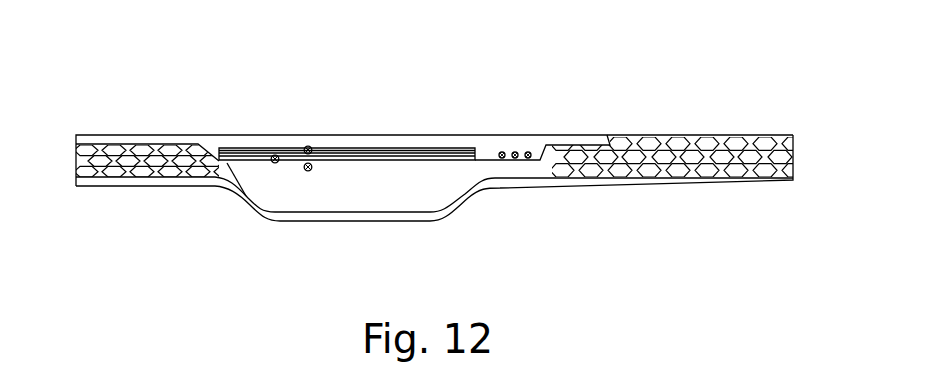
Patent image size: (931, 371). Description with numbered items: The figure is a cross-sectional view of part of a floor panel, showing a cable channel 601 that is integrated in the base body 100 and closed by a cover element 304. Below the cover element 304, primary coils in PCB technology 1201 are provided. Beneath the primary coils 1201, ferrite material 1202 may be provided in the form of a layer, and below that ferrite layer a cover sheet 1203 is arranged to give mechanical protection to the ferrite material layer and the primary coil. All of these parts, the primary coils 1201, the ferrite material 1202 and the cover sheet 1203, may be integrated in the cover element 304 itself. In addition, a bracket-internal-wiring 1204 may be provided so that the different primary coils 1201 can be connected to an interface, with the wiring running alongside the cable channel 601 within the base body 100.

The base body 100 is at (719, 110).
The cover element 304 is at (397, 147).
The cable channel 601 is at (398, 188).
The primary coils in PCB technology 1201 is at (332, 148).
The ferrite material 1202 is at (275, 163).
The cover sheet 1203 is at (308, 171).
The bracket-internal-wiring 1204 is at (499, 152).